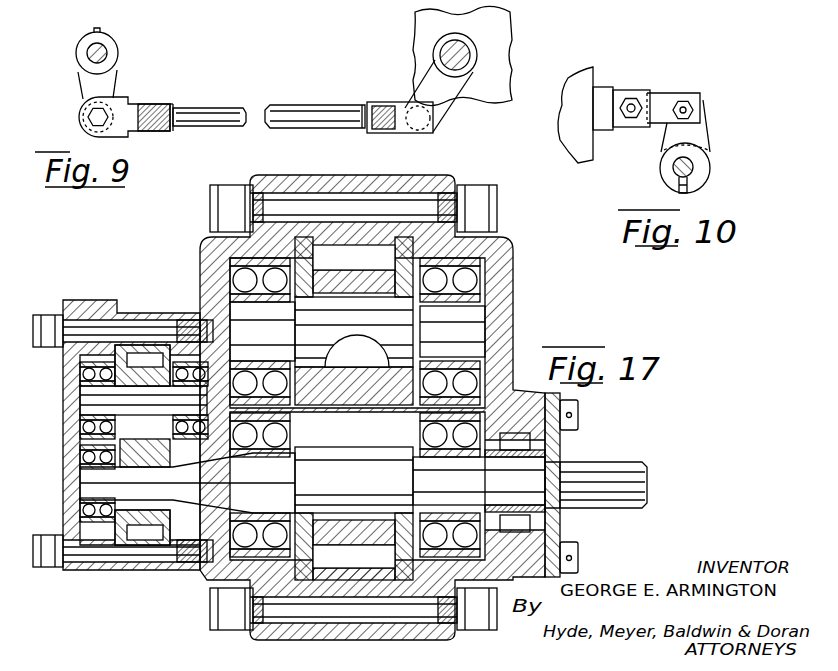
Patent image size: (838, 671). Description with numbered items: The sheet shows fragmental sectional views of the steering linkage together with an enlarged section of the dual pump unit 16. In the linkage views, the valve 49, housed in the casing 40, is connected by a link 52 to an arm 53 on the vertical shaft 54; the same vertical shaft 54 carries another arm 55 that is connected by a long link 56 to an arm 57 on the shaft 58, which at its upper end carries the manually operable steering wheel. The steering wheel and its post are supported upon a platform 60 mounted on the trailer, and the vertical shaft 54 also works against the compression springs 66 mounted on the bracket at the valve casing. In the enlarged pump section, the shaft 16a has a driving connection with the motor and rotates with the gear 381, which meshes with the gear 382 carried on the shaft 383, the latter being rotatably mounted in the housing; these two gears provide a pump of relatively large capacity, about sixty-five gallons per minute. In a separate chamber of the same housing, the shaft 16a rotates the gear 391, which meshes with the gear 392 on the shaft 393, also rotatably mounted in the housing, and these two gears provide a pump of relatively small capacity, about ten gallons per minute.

In FIG. 17, the pump unit 16 is at (516, 283).
In FIG. 17, the shaft 16a is at (620, 443).
In FIG. 10, the casing 40 is at (568, 135).
In FIG. 10, the valve 49 is at (603, 88).
In FIG. 10, the link 52 is at (662, 100).
In FIG. 10, the arm 53 is at (692, 134).
In FIG. 9, the vertical shaft 54 is at (108, 53).
In FIG. 10, the vertical shaft 54 is at (694, 166).
In FIG. 9, the arm 55 is at (92, 82).
In FIG. 9, the long link 56 is at (138, 110).
In FIG. 9, the arm 57 is at (433, 87).
In FIG. 9, the shaft 58 is at (437, 55).
In FIG. 9, the platform 60 is at (507, 63).
In FIG. 10, the compression springs 66 is at (681, 13).
In FIG. 17, the gear 381 is at (354, 556).
In FIG. 17, the gear 382 is at (354, 257).
In FIG. 17, the shaft 383 is at (465, 333).
In FIG. 17, the gear 391 is at (143, 545).
In FIG. 17, the gear 392 is at (137, 345).
In FIG. 17, the shaft 393 is at (118, 400).